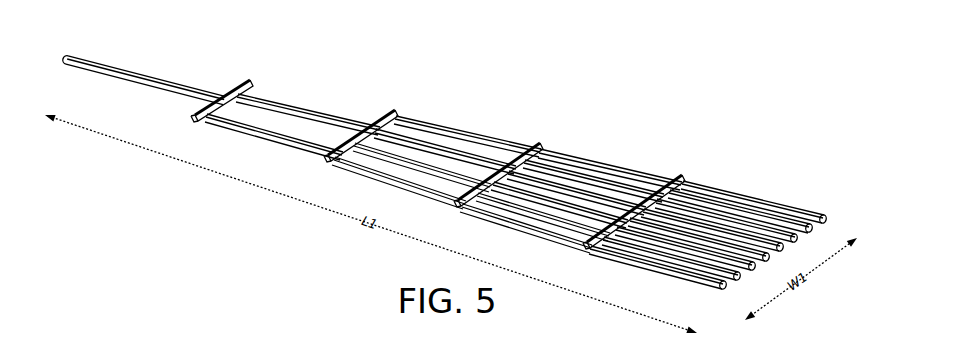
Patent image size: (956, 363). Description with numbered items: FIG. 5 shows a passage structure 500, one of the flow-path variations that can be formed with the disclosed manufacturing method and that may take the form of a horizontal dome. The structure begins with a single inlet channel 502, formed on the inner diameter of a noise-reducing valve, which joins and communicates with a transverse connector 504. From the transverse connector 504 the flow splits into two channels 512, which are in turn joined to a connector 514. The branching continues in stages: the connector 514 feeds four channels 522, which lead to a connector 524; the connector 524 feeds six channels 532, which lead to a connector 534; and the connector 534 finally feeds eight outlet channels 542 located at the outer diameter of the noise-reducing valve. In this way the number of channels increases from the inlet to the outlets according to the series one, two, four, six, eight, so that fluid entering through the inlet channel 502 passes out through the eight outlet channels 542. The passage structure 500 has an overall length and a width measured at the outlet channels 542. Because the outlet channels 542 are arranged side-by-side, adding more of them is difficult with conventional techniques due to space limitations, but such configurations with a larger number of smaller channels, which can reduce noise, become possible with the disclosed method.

The passage structure 500 is at (427, 92).
The inlet channel 502 is at (140, 78).
The transverse connector 504 is at (198, 123).
The channels 512 is at (323, 108).
The connector 514 is at (332, 167).
The channels 522 is at (472, 132).
The connector 524 is at (463, 210).
The channels 532 is at (605, 172).
The connector 534 is at (590, 252).
The outlet channels 542 is at (737, 195).